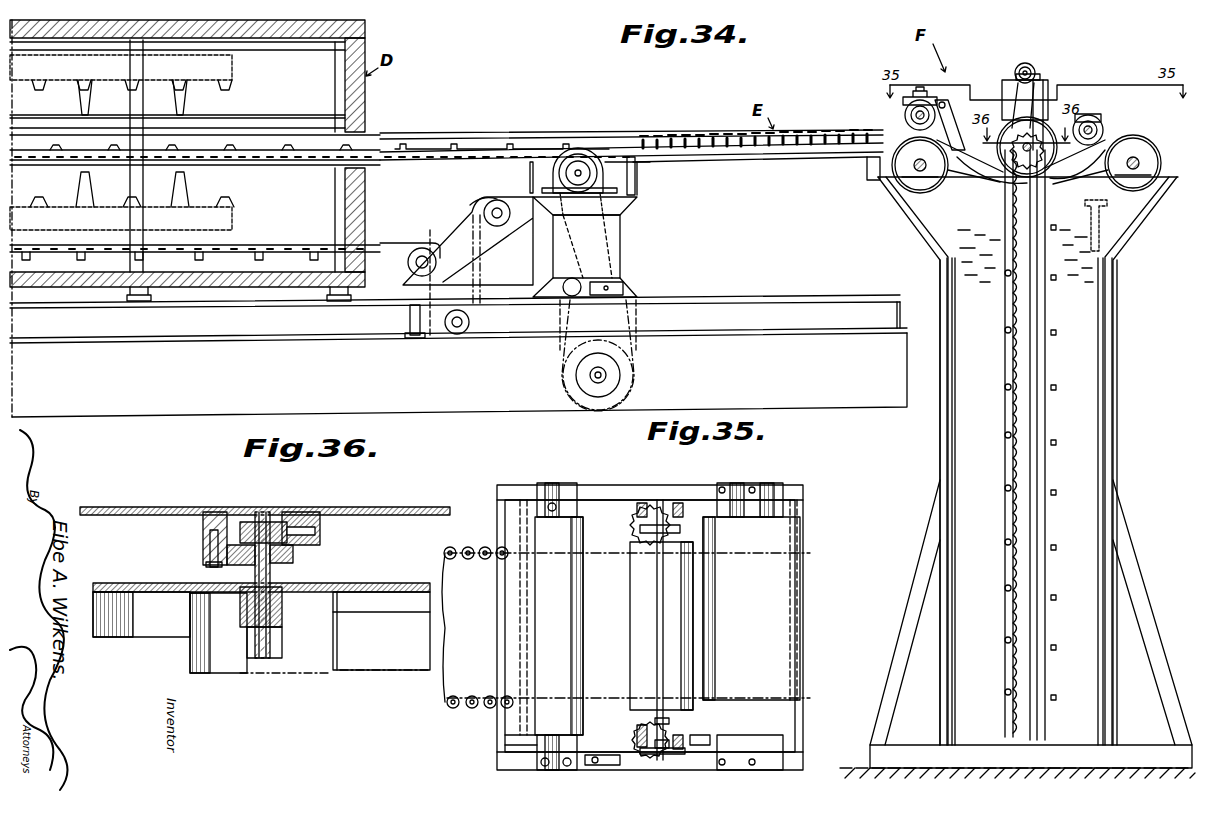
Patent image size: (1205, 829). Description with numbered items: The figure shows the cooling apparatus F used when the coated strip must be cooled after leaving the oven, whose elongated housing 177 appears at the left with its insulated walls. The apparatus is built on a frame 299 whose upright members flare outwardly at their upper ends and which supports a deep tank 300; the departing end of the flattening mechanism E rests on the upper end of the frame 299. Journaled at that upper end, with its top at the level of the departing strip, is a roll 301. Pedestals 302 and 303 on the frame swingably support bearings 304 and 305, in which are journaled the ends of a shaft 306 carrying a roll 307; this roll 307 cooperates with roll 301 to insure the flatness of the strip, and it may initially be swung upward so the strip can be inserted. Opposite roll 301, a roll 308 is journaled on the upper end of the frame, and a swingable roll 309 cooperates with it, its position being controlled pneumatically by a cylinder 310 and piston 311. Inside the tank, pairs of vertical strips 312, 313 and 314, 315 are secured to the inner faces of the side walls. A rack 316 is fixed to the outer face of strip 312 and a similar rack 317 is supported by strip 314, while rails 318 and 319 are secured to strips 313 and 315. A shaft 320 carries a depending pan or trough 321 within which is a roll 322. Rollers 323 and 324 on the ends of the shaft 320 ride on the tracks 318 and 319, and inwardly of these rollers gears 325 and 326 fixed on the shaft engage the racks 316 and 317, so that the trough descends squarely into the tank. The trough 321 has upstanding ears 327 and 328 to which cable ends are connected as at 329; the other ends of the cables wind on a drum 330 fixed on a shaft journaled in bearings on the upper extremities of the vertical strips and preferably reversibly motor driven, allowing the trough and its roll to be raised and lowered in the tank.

In FIG. 34, the elongated housing 177 is at (226, 298).
In FIG. 34, the frame 299 is at (947, 440).
In FIG. 35, the frame 299 is at (630, 492).
In FIG. 34, the deep tank 300 is at (1097, 350).
In FIG. 36, the deep tank 300 is at (350, 507).
In FIG. 34, the roll 301 is at (907, 182).
In FIG. 35, the pedestal 302 is at (587, 487).
In FIG. 35, the pedestal 303 is at (607, 763).
In FIG. 35, the bearing 304 is at (540, 490).
In FIG. 35, the bearing 305 is at (537, 745).
In FIG. 35, the shaft 306 is at (555, 490).
In FIG. 34, the roll 307 is at (903, 118).
In FIG. 35, the roll 307 is at (547, 707).
In FIG. 34, the roll 308 is at (1132, 147).
In FIG. 34, the swingable roll 309 is at (1104, 122).
In FIG. 34, the cylinder 310 is at (1135, 228).
In FIG. 34, the piston 311 is at (1110, 224).
In FIG. 35, the vertical strip 312 is at (619, 512).
In FIG. 36, the vertical strip 312 is at (203, 525).
In FIG. 35, the vertical strip 313 is at (697, 505).
In FIG. 36, the vertical strip 313 is at (320, 520).
In FIG. 35, the vertical strip 314 is at (647, 750).
In FIG. 35, the vertical strip 315 is at (683, 750).
In FIG. 34, the rack 316 is at (1008, 540).
In FIG. 35, the rack 316 is at (637, 519).
In FIG. 36, the rack 316 is at (210, 553).
In FIG. 35, the rack 317 is at (637, 730).
In FIG. 34, the rail 318 is at (1040, 520).
In FIG. 35, the rail 318 is at (673, 505).
In FIG. 36, the rail 318 is at (287, 522).
In FIG. 35, the rail 319 is at (707, 733).
In FIG. 36, the shaft 320 is at (263, 580).
In FIG. 34, the pan or trough 321 is at (1030, 152).
In FIG. 36, the pan or trough 321 is at (360, 585).
In FIG. 34, the roll 322 is at (1006, 182).
In FIG. 35, the roll 322 is at (670, 535).
In FIG. 36, the roll 322 is at (340, 615).
In FIG. 35, the roller 323 is at (660, 505).
In FIG. 36, the roller 323 is at (237, 530).
In FIG. 35, the roller 324 is at (673, 740).
In FIG. 35, the gear 325 is at (703, 533).
In FIG. 36, the gear 325 is at (293, 555).
In FIG. 35, the gear 326 is at (670, 733).
In FIG. 34, the upstanding ear 327 is at (1020, 120).
In FIG. 35, the upstanding ear 328 is at (670, 727).
In FIG. 34, the cable connection 329 is at (1032, 70).
In FIG. 34, the drum 330 is at (1033, 78).